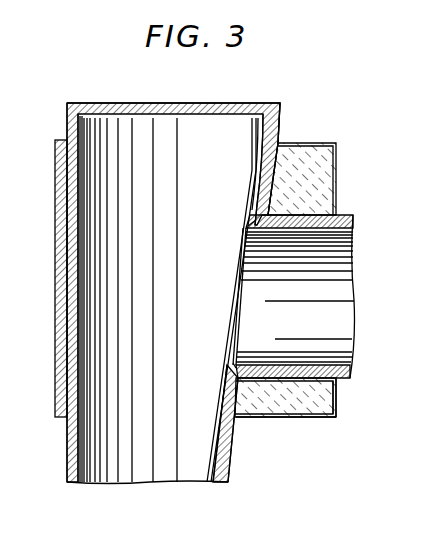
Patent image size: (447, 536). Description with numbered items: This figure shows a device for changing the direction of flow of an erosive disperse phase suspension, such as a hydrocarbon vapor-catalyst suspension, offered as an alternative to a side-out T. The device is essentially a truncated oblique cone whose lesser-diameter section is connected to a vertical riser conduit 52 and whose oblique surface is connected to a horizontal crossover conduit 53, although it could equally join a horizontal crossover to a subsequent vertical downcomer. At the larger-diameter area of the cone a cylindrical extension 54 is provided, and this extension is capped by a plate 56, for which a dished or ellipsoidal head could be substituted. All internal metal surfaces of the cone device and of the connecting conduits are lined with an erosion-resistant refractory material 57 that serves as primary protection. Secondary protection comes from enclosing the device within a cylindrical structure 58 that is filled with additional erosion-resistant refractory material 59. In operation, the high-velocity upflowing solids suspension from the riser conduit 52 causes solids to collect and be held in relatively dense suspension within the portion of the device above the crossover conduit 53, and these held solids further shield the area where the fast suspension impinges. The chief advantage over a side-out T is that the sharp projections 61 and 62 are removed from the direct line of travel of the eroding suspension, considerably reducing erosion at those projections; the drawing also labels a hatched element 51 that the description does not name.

The sealing block 51 is at (277, 188).
The riser conduit 52 is at (236, 462).
The crossover conduit 53 is at (343, 214).
The cylindrical extension 54 is at (282, 126).
The plate 56 is at (143, 102).
The erosion-resistant refractory material 57 is at (184, 103).
The cylindrical structure 58 is at (284, 417).
The additional erosion-resistant refractory material 59 is at (320, 406).
The sharp projection 61 is at (252, 232).
The sharp projection 62 is at (233, 366).